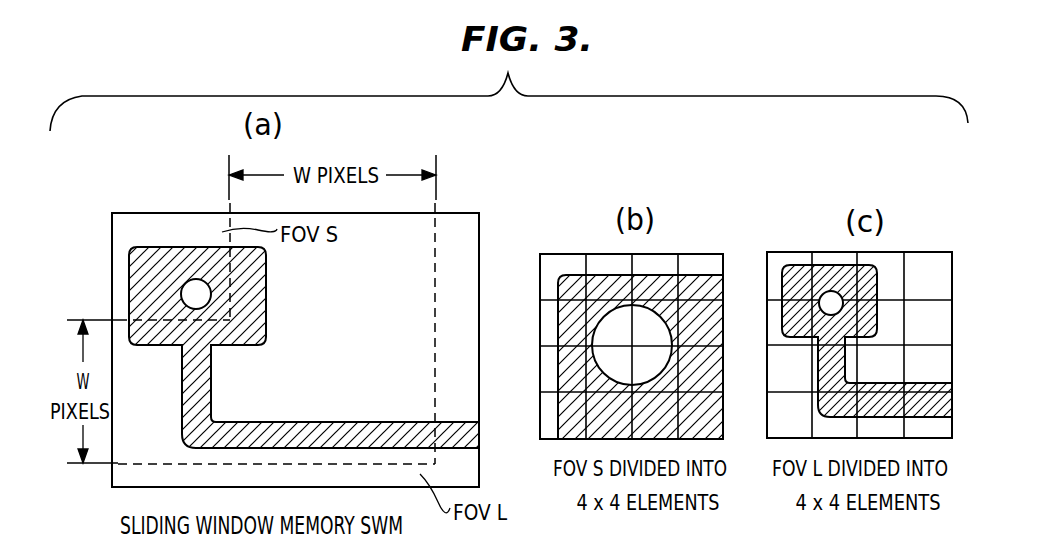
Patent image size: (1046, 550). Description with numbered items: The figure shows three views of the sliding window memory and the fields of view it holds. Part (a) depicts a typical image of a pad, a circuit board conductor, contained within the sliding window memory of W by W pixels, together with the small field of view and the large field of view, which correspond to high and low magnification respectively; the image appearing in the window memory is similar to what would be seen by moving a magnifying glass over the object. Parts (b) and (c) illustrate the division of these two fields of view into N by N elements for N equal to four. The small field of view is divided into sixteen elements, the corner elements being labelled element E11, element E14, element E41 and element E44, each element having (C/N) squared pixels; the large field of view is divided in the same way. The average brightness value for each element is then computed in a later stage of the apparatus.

The element E11 is at (563, 277).
The element E14 is at (700, 277).
The element E41 is at (563, 415).
The element E44 is at (700, 415).